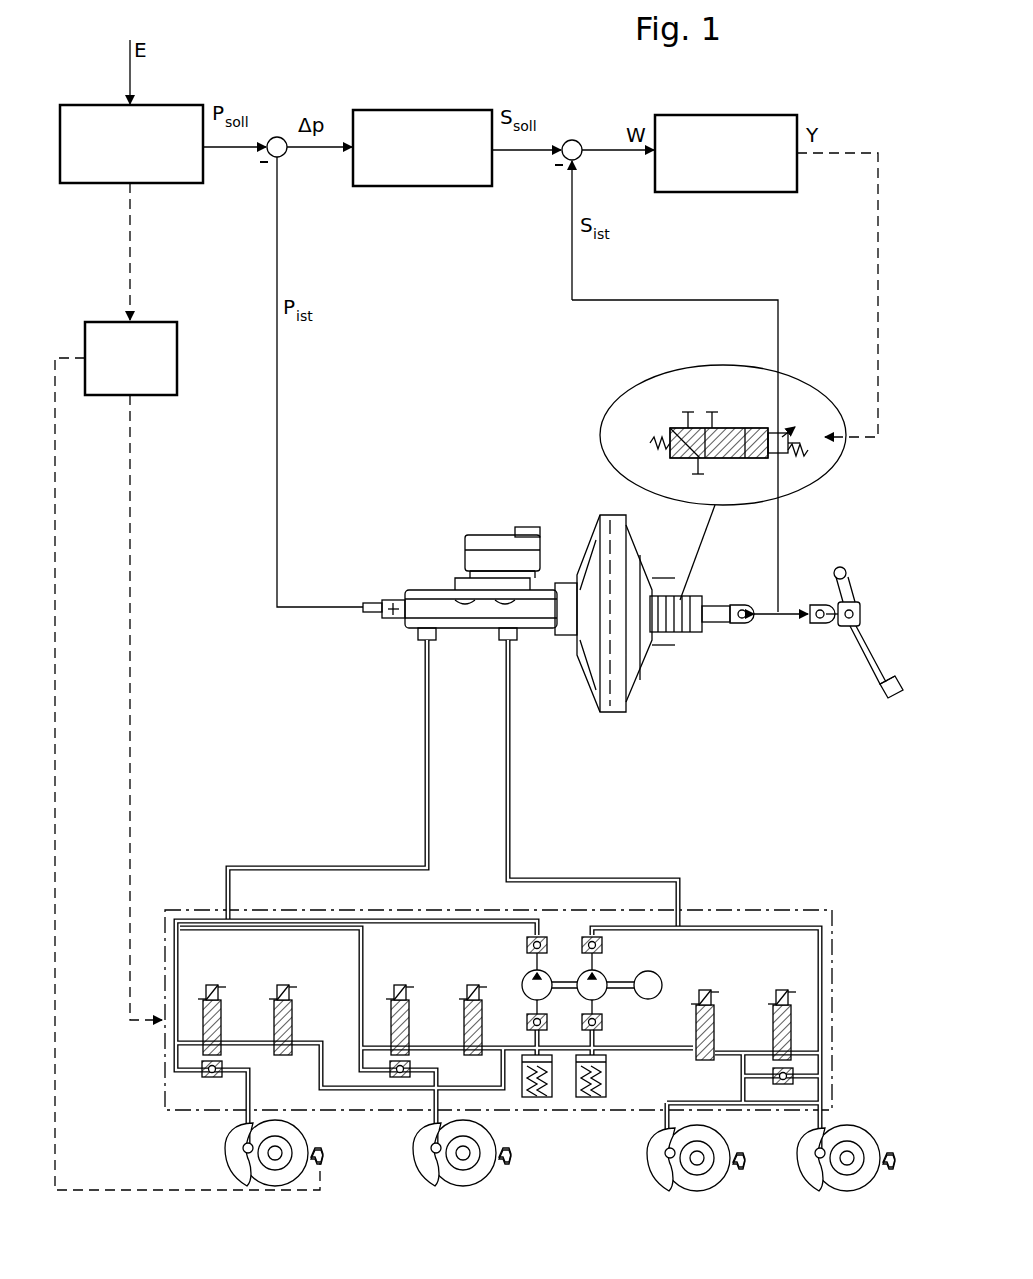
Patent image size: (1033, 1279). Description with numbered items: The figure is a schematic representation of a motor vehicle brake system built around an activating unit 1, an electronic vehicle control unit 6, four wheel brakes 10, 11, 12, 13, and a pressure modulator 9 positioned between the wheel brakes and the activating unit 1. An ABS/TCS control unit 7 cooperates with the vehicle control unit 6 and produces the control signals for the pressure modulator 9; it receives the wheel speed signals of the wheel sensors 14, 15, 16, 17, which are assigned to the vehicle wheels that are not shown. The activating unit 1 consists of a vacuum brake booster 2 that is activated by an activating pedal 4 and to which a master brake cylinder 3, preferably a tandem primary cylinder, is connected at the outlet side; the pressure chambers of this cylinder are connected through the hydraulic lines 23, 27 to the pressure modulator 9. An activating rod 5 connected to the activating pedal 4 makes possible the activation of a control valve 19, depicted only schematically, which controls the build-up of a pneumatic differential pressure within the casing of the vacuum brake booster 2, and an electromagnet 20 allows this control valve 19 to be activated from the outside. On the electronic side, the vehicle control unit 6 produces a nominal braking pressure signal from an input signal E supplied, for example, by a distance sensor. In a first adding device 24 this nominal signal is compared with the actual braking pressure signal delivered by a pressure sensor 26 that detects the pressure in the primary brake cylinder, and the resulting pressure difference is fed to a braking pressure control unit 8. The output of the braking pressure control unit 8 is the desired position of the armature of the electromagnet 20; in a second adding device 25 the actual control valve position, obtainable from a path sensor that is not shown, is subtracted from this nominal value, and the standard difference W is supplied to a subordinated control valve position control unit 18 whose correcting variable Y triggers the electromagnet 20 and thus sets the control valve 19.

The activating unit 1 is at (563, 520).
The vacuum brake booster 2 is at (646, 678).
The master brake cylinder 3 is at (423, 590).
The activating pedal 4 is at (862, 640).
The activating rod 5 is at (720, 623).
The electronic vehicle control unit 6 is at (93, 108).
The ABS/TCS control unit 7 is at (150, 326).
The braking pressure control unit 8 is at (423, 111).
The pressure modulator 9 is at (520, 895).
The wheel brake 10 is at (250, 1165).
The wheel brake 11 is at (440, 1165).
The wheel brake 12 is at (672, 1170).
The wheel brake 13 is at (826, 1174).
The wheel sensor 14 is at (322, 1152).
The wheel sensor 15 is at (510, 1152).
The wheel sensor 16 is at (740, 1157).
The wheel sensor 17 is at (890, 1160).
The control valve position control unit 18 is at (775, 117).
The control valve 19 is at (808, 484).
The electromagnet 20 is at (790, 430).
The hydraulic line 23 is at (515, 793).
The first adding device 24 is at (277, 137).
The second adding device 25 is at (572, 140).
The pressure sensor 26 is at (390, 620).
The hydraulic line 27 is at (420, 793).